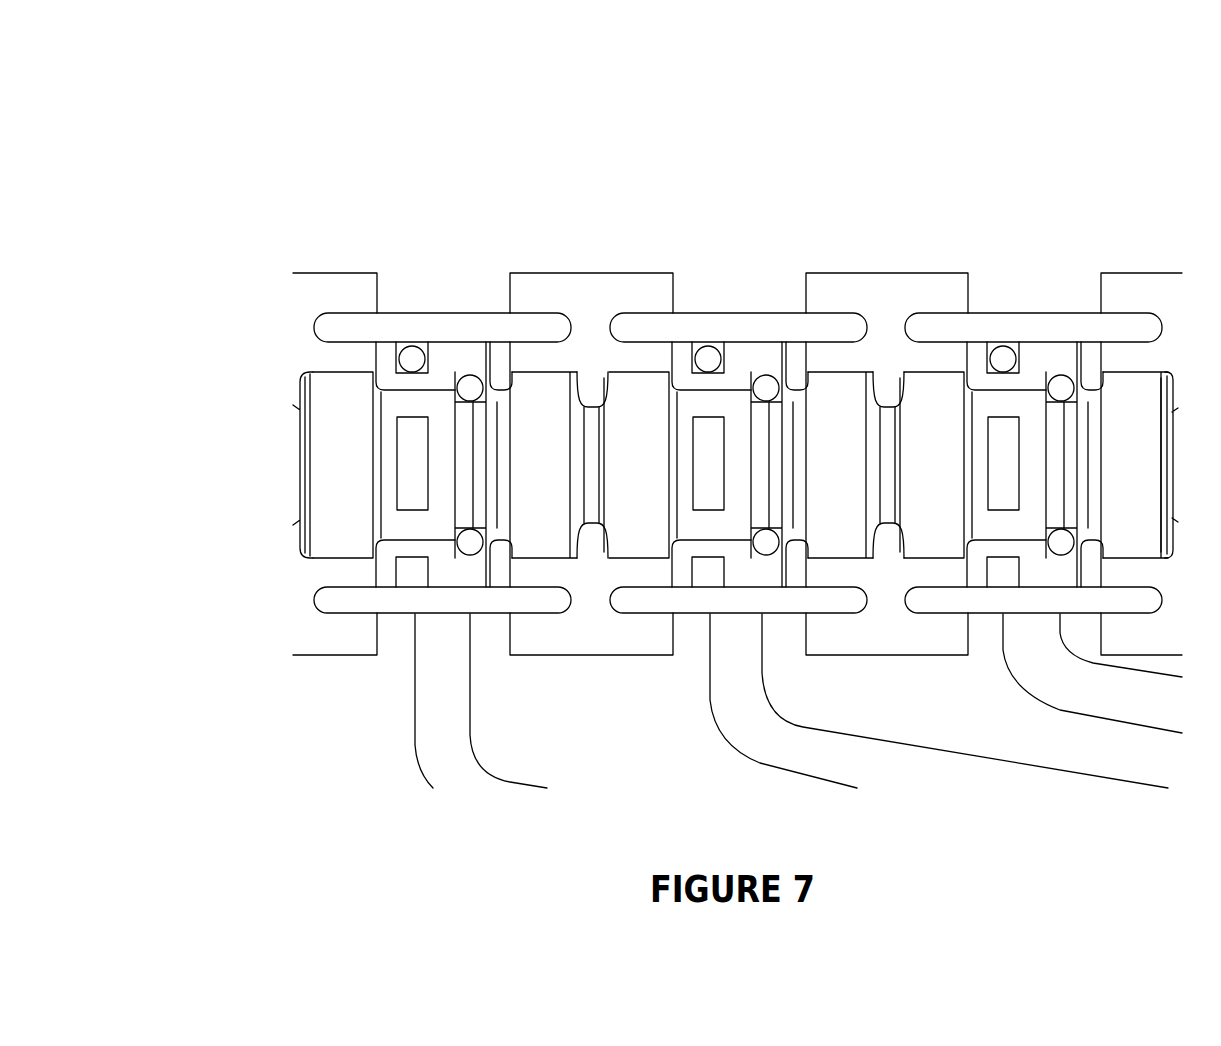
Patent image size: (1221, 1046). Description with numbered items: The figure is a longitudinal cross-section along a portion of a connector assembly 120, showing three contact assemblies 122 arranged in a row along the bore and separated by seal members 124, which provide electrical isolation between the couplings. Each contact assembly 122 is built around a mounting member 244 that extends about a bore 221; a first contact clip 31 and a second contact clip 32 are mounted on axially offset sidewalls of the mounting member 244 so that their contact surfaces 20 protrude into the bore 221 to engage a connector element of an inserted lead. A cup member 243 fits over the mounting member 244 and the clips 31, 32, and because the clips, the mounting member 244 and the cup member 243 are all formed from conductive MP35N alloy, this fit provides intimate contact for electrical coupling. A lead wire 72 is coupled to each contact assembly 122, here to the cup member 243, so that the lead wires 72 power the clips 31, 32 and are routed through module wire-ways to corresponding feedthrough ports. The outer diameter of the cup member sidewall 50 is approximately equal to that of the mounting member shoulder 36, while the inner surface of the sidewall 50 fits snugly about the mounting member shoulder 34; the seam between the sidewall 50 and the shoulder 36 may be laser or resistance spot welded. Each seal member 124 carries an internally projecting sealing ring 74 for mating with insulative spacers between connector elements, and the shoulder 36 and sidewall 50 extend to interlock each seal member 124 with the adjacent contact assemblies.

The connector assembly 120 is at (563, 93).
The seal member 124 is at (838, 273).
The contact assembly 122 is at (434, 292).
The mounting member shoulder 36 is at (326, 305).
The contact surface 20 is at (708, 463).
The second contact clip 32 is at (410, 335).
The first contact clip 31 is at (477, 571).
The bore 221 is at (336, 474).
The sealing ring 74 is at (893, 412).
The mounting member shoulder 34 is at (443, 355).
The cup member sidewall 50 is at (533, 323).
The cup member 243 is at (463, 313).
The mounting member 244 is at (358, 317).
The lead wire 72 is at (427, 712).